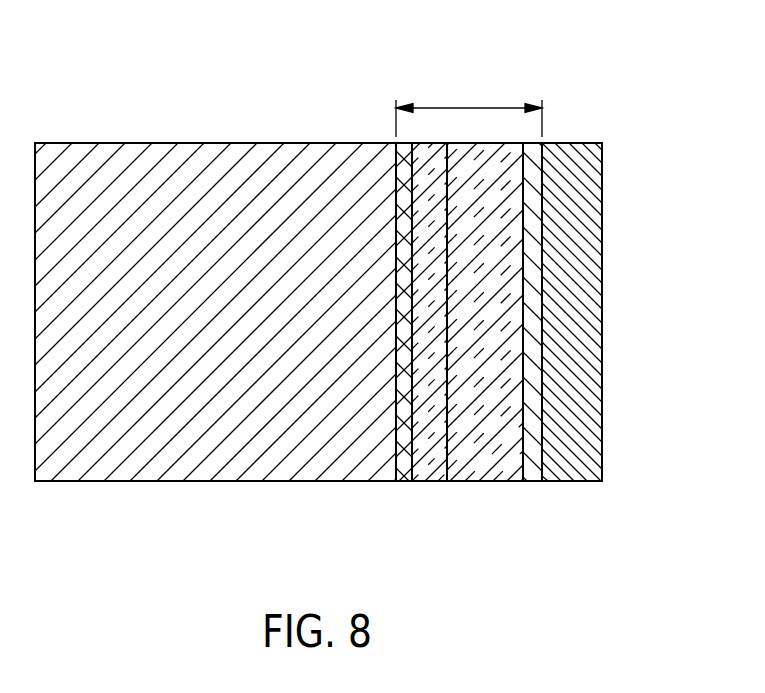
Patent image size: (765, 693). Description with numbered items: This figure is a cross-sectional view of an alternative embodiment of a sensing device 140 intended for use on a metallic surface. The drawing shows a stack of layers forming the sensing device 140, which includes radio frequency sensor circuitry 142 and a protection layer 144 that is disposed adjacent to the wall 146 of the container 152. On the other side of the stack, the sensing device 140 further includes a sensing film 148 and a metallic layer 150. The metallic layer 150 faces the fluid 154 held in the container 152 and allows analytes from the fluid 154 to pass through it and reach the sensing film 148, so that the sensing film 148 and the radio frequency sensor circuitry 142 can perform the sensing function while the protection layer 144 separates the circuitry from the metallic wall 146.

The sensing device 140 is at (480, 108).
The radio frequency sensor circuitry 142 is at (473, 482).
The protection layer 144 is at (531, 482).
The wall 146 is at (570, 142).
The sensing film 148 is at (424, 482).
The metallic layer 150 is at (400, 482).
The container 152 is at (228, 481).
The fluid 154 is at (188, 153).